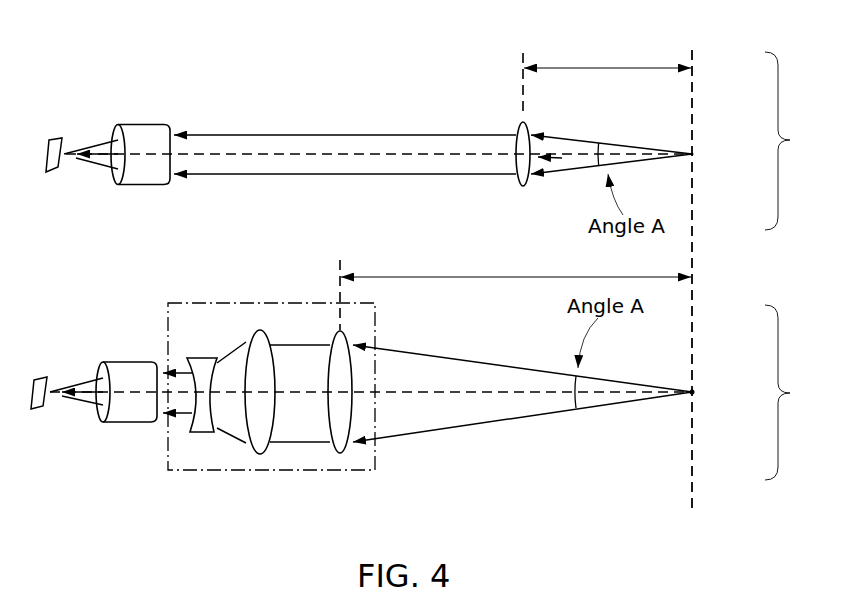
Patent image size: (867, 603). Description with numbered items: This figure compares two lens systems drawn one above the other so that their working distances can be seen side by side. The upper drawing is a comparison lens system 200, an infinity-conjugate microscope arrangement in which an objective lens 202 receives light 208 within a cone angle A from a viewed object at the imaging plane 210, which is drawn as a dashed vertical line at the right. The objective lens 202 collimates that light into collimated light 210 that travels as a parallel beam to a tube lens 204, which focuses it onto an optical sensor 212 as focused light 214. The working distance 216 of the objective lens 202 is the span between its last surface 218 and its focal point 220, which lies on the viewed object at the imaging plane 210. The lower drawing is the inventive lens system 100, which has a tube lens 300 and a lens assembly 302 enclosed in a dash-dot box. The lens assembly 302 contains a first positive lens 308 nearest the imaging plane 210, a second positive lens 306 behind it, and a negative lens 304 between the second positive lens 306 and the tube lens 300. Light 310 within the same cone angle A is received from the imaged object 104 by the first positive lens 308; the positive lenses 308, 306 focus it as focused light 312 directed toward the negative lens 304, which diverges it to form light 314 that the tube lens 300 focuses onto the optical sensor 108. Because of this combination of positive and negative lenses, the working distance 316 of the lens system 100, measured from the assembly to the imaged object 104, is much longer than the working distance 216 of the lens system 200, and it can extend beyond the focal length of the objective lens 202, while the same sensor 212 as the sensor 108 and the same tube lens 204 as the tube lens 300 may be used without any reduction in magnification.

The lens system 100 is at (804, 392).
The imaged object 104 is at (697, 393).
The optical sensor 108 is at (38, 385).
The lens system 200 is at (803, 141).
The objective lens 202 is at (520, 188).
The tube lens 204 is at (140, 124).
The light 208 is at (620, 144).
The imaging plane 210 is at (355, 168).
The optical sensor 212 is at (50, 147).
The focused light 214 is at (103, 144).
The working distance 216 is at (607, 67).
The last surface 218 is at (562, 158).
The focal point 220 is at (700, 153).
The tube lens 300 is at (125, 424).
The lens assembly 302 is at (235, 302).
The negative lens 304 is at (202, 434).
The second positive lens 306 is at (258, 455).
The first positive lens 308 is at (342, 455).
The light 310 is at (437, 432).
The focused light 312 is at (293, 342).
The light 314 is at (240, 357).
The working distance 316 is at (515, 282).